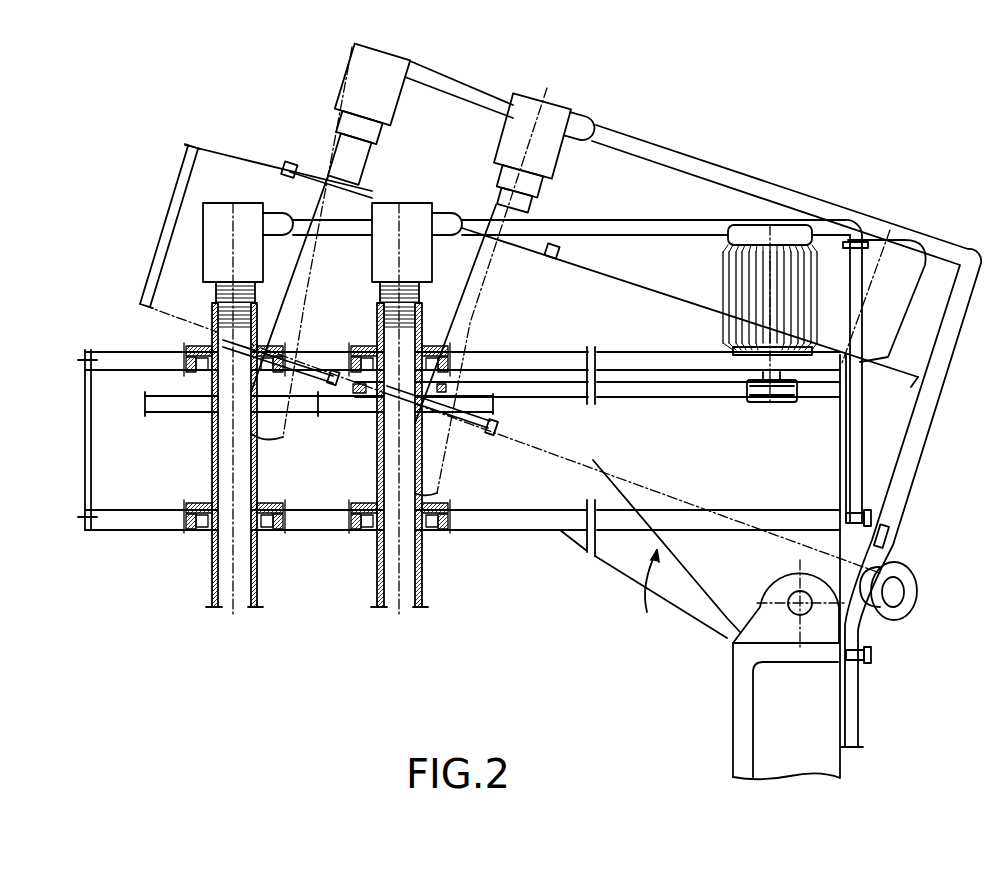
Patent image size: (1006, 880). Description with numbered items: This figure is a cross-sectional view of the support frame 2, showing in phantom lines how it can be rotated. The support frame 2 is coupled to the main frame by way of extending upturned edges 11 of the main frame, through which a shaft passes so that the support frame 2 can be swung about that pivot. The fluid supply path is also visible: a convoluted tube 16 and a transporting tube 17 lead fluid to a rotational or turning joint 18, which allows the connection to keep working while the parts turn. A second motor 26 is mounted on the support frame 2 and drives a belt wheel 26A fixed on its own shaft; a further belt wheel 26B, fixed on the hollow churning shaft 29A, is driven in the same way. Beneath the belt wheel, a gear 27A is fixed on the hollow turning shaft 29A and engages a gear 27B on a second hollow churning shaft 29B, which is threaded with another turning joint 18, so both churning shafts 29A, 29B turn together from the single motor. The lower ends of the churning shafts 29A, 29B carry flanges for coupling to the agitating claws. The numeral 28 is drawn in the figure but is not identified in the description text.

The support frame 2 is at (810, 438).
The extending upturned edge 11 is at (733, 637).
The convoluted tube 16 is at (882, 582).
The transporting tube 17 is at (946, 314).
The rotational joint 18 is at (246, 213).
The second motor 26 is at (792, 237).
The belt wheel 26A is at (797, 400).
The belt wheel 26B is at (370, 393).
The gear 27A is at (467, 405).
The gear 27B is at (300, 405).
The bearing 28 is at (433, 345).
The hollow churning shaft 29A is at (407, 575).
The hollow churning shaft 29B is at (228, 577).